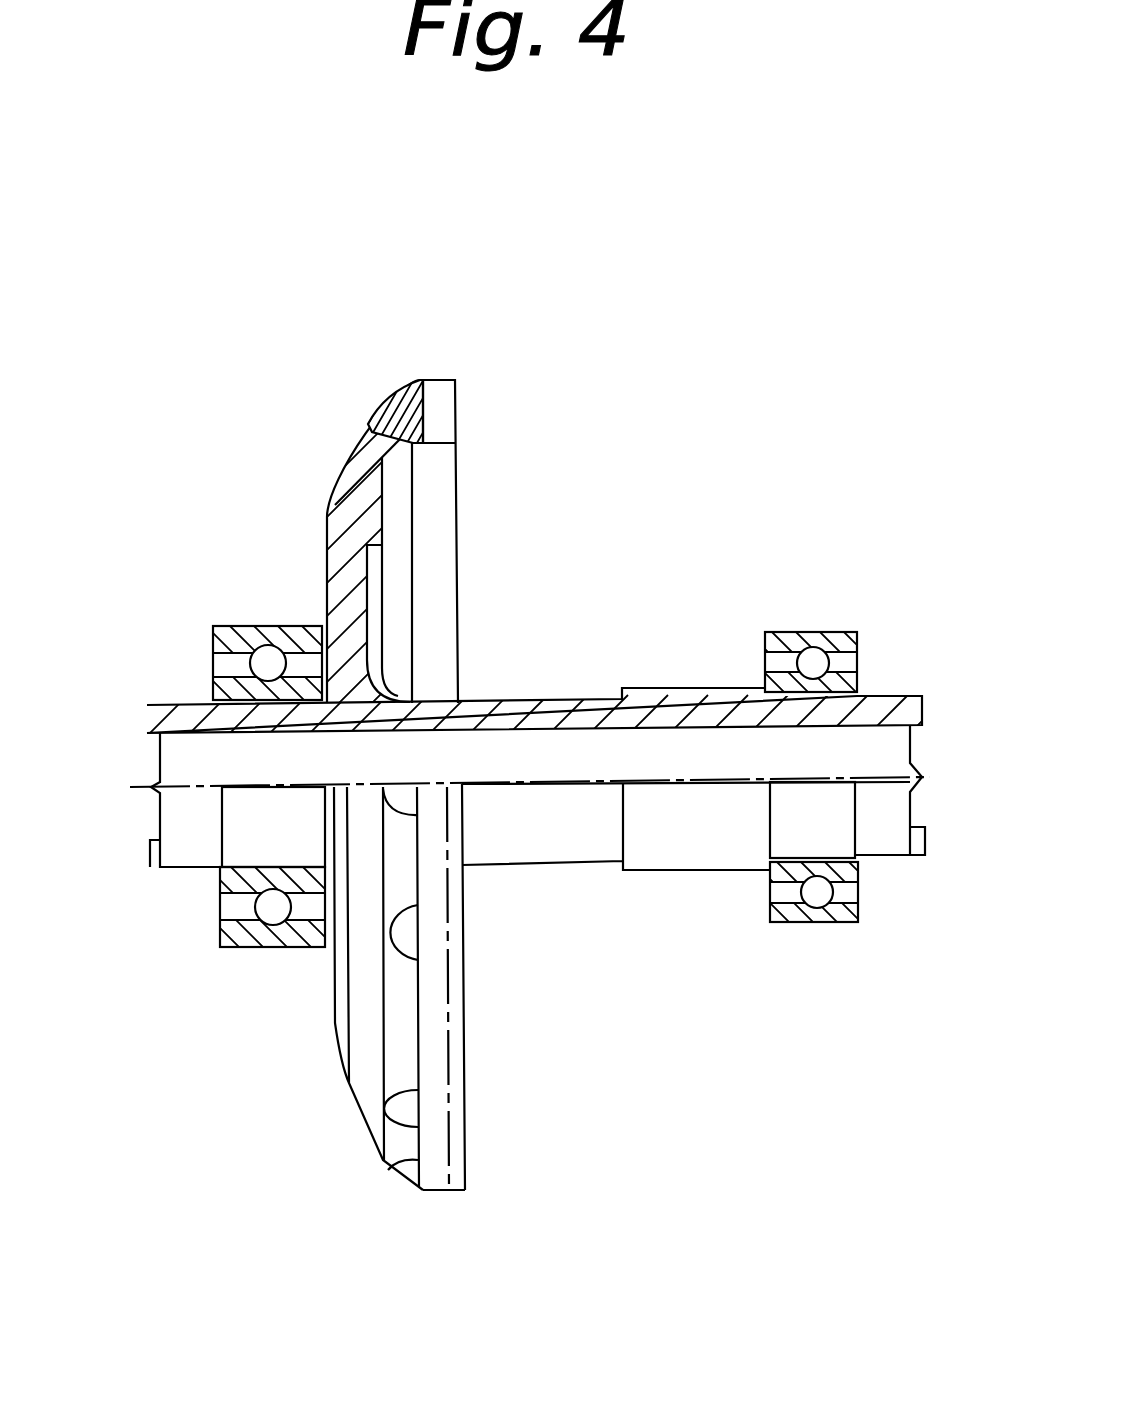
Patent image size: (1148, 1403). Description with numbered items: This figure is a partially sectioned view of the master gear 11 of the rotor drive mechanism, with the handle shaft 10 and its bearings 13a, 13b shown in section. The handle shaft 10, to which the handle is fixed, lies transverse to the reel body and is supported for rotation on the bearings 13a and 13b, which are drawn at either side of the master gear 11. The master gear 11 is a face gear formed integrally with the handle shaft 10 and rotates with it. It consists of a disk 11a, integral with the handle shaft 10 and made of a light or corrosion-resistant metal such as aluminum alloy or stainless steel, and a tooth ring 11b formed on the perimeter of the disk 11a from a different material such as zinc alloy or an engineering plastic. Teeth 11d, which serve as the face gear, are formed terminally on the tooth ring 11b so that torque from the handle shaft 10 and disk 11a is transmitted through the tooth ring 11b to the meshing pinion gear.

The handle shaft 10 is at (581, 708).
The master gear 11 is at (403, 709).
The disk 11a is at (335, 503).
The tooth ring 11b is at (392, 392).
The teeth 11d is at (443, 410).
The bearing 13a is at (243, 633).
The bearing 13b is at (817, 634).